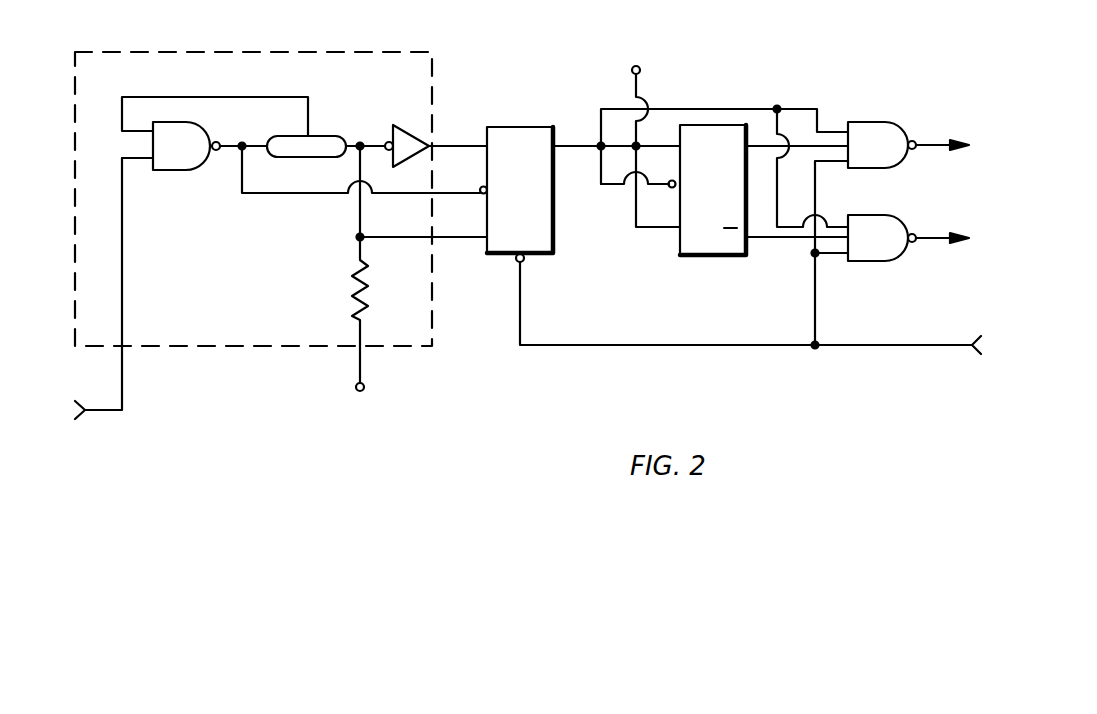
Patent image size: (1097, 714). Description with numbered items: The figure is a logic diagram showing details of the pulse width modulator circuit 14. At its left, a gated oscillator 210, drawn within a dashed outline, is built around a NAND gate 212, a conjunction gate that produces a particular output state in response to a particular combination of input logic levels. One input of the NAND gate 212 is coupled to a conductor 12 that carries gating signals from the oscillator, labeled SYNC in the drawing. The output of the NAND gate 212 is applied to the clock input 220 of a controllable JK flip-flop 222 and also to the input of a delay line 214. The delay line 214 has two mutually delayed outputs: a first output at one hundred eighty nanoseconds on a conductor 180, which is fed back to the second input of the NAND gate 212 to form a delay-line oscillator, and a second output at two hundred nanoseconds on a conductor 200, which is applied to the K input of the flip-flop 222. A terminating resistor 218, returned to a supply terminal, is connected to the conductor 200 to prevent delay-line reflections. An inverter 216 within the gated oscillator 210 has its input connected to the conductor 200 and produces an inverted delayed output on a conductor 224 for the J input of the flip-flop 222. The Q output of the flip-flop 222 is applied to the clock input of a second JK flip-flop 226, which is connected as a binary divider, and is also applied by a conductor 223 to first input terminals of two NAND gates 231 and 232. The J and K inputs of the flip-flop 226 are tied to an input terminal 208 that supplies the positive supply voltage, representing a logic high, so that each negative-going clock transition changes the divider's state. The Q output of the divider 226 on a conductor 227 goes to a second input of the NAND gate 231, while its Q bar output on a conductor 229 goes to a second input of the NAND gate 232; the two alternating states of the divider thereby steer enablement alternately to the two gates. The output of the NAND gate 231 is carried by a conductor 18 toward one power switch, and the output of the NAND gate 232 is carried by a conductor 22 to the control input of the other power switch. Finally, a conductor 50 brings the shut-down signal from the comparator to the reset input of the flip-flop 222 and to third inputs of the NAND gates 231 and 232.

The gated oscillator 210 is at (272, 50).
The conductor 12 is at (122, 358).
The conductor 180 is at (232, 96).
The NAND gate 212 is at (176, 172).
The delay line 214 is at (347, 114).
The inverter 216 is at (410, 124).
The terminating resistor 218 is at (348, 285).
The conductor 224 is at (452, 143).
The clock input 220 is at (460, 183).
The conductor 200 is at (468, 240).
The controllable JK flip-flop 222 is at (516, 125).
The input terminal 208 is at (632, 70).
The conductor 223 is at (730, 110).
The JK flip-flop 226 is at (714, 256).
The conductor 227 is at (804, 146).
The conductor 229 is at (784, 240).
The NAND gate 231 is at (880, 121).
The NAND gate 232 is at (906, 211).
The conductor 18 is at (924, 139).
The conductor 22 is at (924, 242).
The conductor 50 is at (869, 343).
The pulse width modulator circuit 14 is at (537, 415).